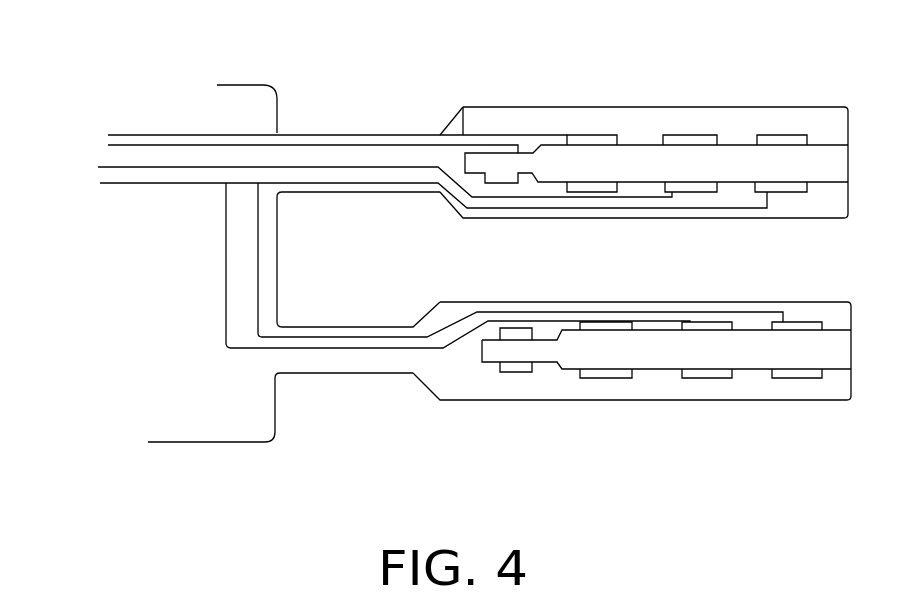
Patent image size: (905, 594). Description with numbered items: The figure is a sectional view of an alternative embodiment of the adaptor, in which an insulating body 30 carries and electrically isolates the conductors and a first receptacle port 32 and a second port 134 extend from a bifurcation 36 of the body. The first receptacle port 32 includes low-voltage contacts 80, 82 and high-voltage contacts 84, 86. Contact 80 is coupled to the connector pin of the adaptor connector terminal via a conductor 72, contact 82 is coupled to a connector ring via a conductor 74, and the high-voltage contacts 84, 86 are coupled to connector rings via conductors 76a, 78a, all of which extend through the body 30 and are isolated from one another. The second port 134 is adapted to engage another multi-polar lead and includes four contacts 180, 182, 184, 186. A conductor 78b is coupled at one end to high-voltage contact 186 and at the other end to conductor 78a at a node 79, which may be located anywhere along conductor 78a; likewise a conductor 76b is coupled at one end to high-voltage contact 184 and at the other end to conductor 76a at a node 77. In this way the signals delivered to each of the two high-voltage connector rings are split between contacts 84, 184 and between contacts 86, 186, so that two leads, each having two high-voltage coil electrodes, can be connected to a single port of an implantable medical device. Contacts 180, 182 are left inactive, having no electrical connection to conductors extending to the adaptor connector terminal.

The insulating body 30 is at (268, 444).
The first receptacle port 32 is at (657, 107).
The bifurcation 36 is at (323, 412).
The conductor 72 is at (293, 133).
The conductor 74 is at (462, 107).
The conductor 76a is at (133, 167).
The conductor 76b is at (297, 350).
The node 77 is at (233, 187).
The conductor 78a is at (208, 187).
The conductor 78b is at (380, 337).
The node 79 is at (265, 195).
The low-voltage contact 80 is at (503, 135).
The low-voltage contact 82 is at (582, 135).
The high-voltage contact 84 is at (700, 135).
The high-voltage contact 86 is at (785, 135).
The second port 134 is at (668, 300).
The contact 180 is at (505, 372).
The contact 182 is at (602, 378).
The high-voltage contact 184 is at (688, 378).
The high-voltage contact 186 is at (797, 378).